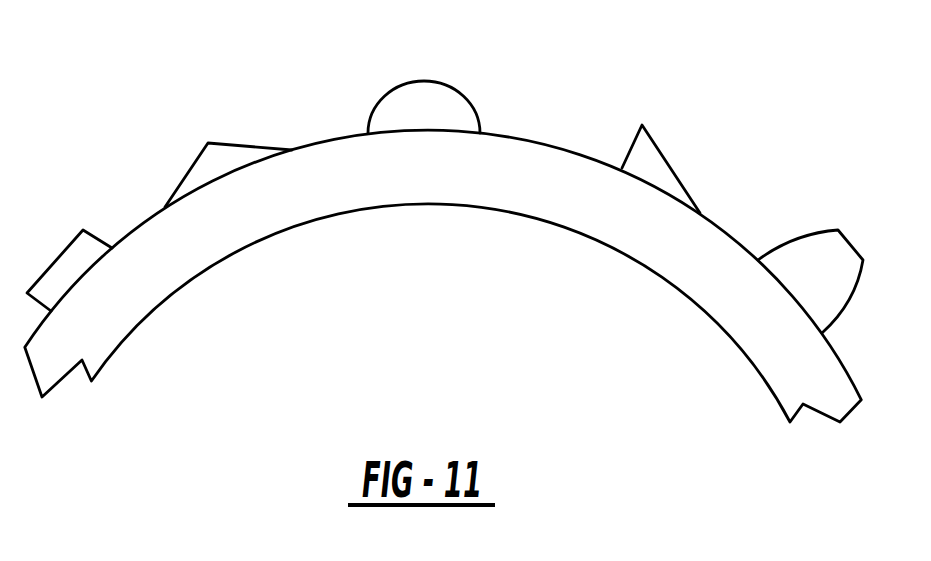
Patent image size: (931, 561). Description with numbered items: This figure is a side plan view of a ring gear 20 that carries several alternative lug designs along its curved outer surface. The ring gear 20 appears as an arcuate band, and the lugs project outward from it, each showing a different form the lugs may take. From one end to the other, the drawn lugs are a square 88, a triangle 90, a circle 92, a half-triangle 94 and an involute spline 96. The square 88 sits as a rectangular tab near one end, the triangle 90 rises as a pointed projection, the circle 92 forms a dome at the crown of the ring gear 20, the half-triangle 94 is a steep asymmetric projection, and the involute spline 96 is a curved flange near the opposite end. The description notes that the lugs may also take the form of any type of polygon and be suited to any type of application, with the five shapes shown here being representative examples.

The ring gear 20 is at (198, 233).
The square lug 88 is at (72, 268).
The triangle lug 90 is at (221, 162).
The circle lug 92 is at (413, 102).
The half-triangle lug 94 is at (650, 152).
The involute spline lug 96 is at (818, 250).